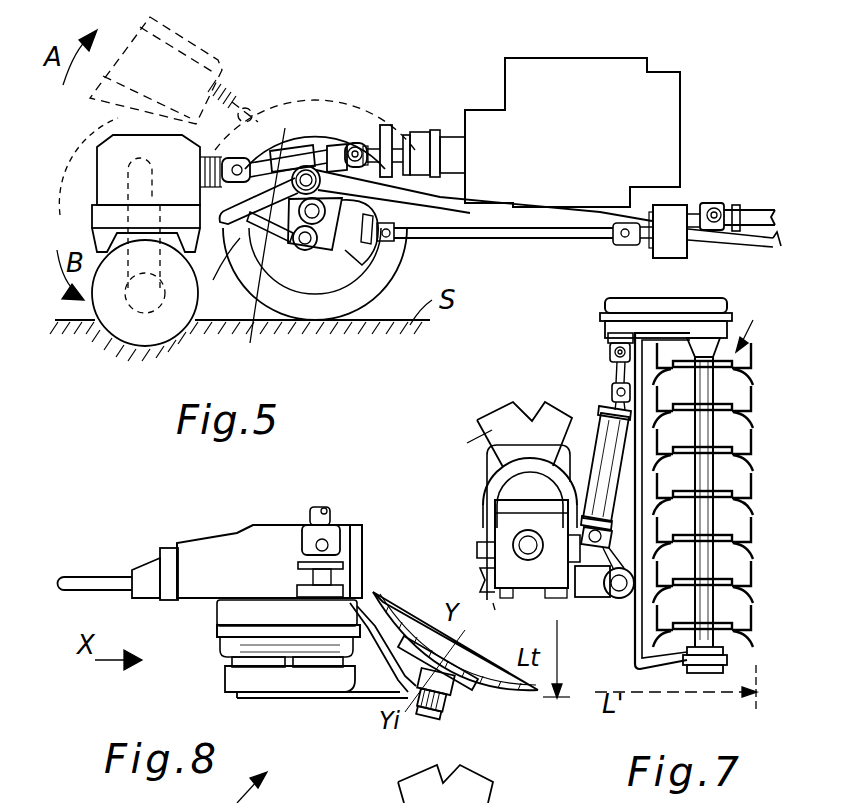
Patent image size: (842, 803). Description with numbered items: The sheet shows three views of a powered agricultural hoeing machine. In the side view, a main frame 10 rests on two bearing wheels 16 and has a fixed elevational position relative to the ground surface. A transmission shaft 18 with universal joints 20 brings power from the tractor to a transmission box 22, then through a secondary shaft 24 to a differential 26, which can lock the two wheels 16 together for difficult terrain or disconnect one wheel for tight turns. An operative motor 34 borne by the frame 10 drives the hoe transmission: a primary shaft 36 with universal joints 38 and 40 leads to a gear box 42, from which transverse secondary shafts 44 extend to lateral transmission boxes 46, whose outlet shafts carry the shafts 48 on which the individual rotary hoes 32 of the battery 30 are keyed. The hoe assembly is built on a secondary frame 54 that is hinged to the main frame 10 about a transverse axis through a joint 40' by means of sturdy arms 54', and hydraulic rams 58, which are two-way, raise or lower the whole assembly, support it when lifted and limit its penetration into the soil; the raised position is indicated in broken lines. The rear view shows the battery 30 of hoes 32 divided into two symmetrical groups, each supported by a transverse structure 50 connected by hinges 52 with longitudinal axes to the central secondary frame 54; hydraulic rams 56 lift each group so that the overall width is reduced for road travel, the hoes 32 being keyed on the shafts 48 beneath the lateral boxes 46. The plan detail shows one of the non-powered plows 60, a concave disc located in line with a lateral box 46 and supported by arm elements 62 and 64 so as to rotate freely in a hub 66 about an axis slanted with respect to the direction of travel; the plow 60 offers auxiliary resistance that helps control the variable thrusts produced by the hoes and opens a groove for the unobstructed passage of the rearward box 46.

In FIG. 5, the main frame 10 is at (443, 228).
In FIG. 5, the bearing wheels 16 is at (330, 125).
In FIG. 5, the transmission shaft 18 is at (750, 210).
In FIG. 5, the universal joints 20 is at (714, 206).
In FIG. 5, the transmission box 22 is at (670, 243).
In FIG. 5, the secondary shaft 24 is at (545, 238).
In FIG. 5, the differential 26 is at (347, 247).
In FIG. 5, the battery of rotary hoes 30 is at (130, 340).
In FIG. 7, the battery of rotary hoes 30 is at (756, 321).
In FIG. 7, the rotary hoes 32 is at (753, 448).
In FIG. 8, the rotary hoes 32 is at (72, 565).
In FIG. 5, the operative motor 34 is at (668, 123).
In FIG. 7, the operative motor 34 is at (457, 440).
In FIG. 8, the operative motor 34 is at (475, 800).
In FIG. 5, the primary shaft 36 is at (283, 150).
In FIG. 5, the universal joint 38 is at (238, 157).
In FIG. 5, the universal joint 40 is at (363, 125).
In FIG. 5, the joint 40' is at (327, 129).
In FIG. 5, the gear box 42 is at (110, 165).
In FIG. 7, the gear box 42 is at (508, 525).
In FIG. 7, the transverse secondary shafts 44 is at (613, 368).
In FIG. 8, the transverse secondary shafts 44 is at (318, 508).
In FIG. 7, the lateral transmission boxes 46 is at (603, 322).
In FIG. 8, the lateral transmission boxes 46 is at (233, 647).
In FIG. 7, the hoe shafts 48 is at (700, 643).
In FIG. 7, the transverse structures 50 is at (635, 618).
In FIG. 7, the hinges 52 is at (615, 592).
In FIG. 5, the secondary frame 54 is at (127, 210).
In FIG. 7, the secondary frame 54 is at (512, 619).
In FIG. 5, the arms 54' is at (219, 276).
In FIG. 7, the hydraulic rams 56 is at (603, 435).
In FIG. 5, the hydraulic rams 58 is at (258, 251).
In FIG. 5, the plows 60 is at (387, 123).
In FIG. 8, the plows 60 is at (413, 600).
In FIG. 8, the arm element 62 is at (335, 697).
In FIG. 8, the arm element 64 is at (363, 610).
In FIG. 8, the hubs 66 is at (450, 693).